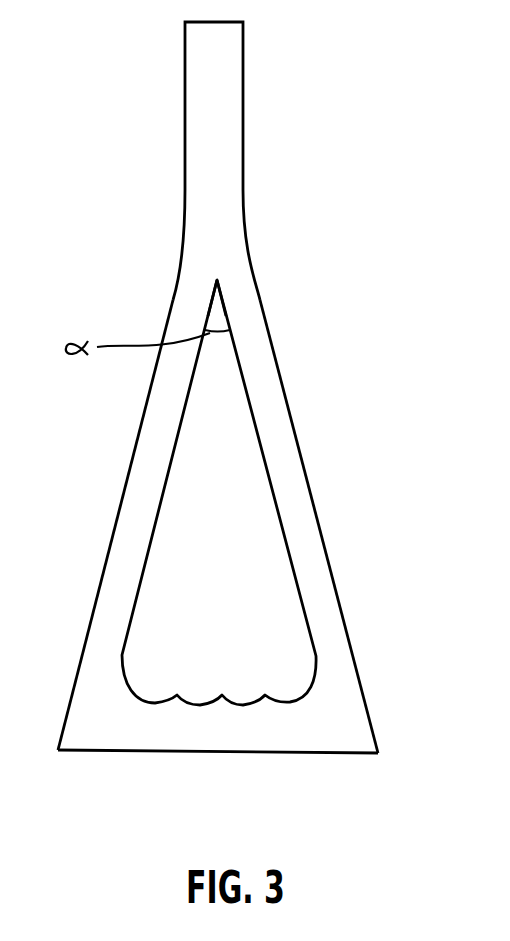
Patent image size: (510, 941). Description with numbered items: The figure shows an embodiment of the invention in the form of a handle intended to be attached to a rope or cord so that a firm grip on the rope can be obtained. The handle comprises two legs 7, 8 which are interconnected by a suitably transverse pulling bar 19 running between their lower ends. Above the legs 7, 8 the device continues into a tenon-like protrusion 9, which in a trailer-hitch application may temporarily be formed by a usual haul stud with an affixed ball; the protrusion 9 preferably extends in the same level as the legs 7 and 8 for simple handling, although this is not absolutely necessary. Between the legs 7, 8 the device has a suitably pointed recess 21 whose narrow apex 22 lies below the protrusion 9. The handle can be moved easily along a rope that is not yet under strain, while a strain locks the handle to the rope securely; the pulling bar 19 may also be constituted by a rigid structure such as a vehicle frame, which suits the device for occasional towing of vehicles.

The tenon-like protrusion 9 is at (218, 128).
The leg 8 is at (147, 472).
The leg 7 is at (283, 473).
The pulling bar 19 is at (205, 723).
The pointed recess 21 is at (222, 565).
The apex of cavity 22 is at (220, 305).